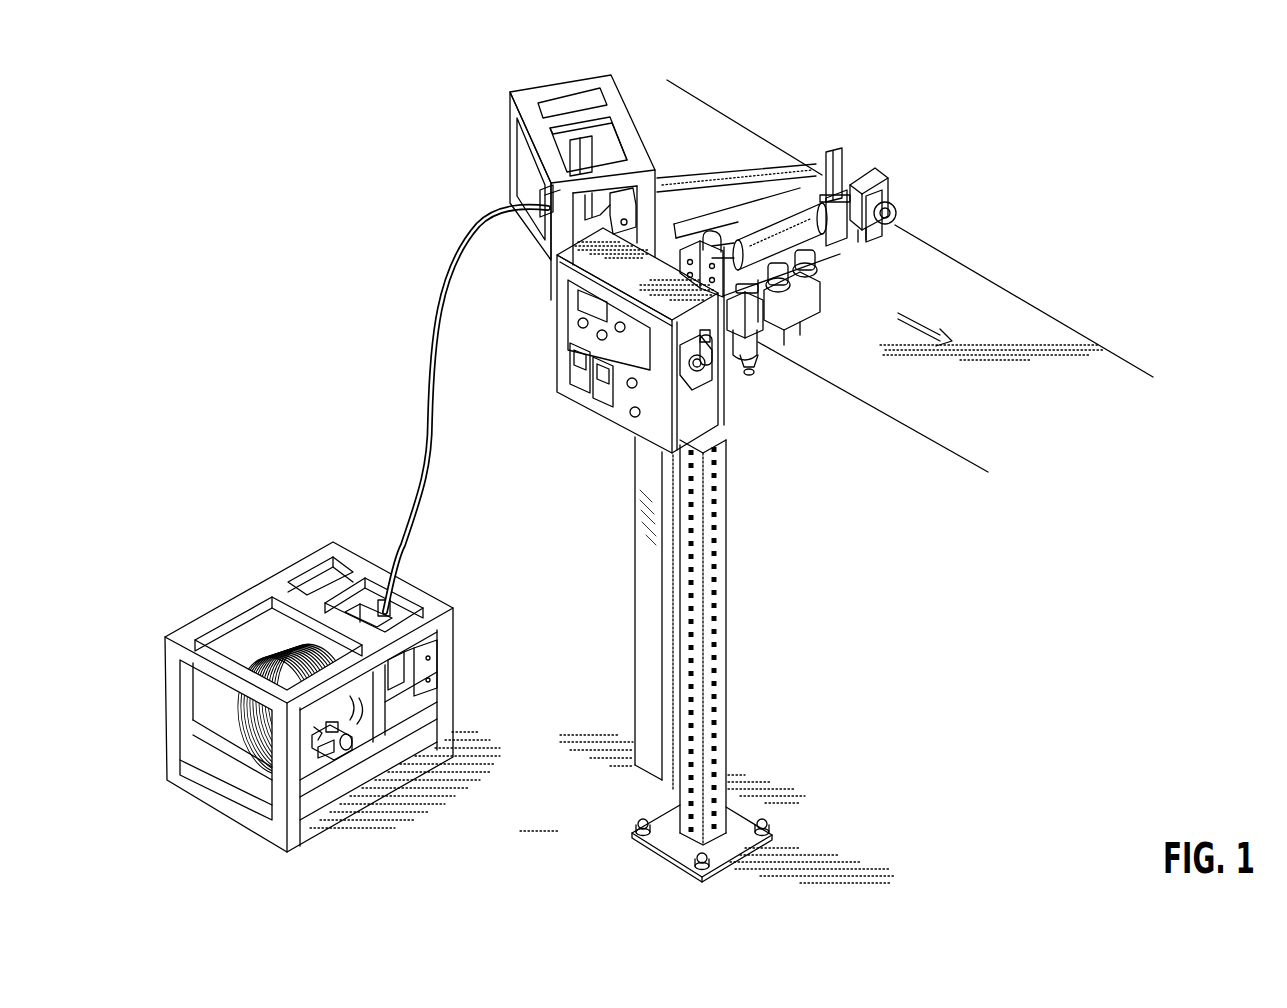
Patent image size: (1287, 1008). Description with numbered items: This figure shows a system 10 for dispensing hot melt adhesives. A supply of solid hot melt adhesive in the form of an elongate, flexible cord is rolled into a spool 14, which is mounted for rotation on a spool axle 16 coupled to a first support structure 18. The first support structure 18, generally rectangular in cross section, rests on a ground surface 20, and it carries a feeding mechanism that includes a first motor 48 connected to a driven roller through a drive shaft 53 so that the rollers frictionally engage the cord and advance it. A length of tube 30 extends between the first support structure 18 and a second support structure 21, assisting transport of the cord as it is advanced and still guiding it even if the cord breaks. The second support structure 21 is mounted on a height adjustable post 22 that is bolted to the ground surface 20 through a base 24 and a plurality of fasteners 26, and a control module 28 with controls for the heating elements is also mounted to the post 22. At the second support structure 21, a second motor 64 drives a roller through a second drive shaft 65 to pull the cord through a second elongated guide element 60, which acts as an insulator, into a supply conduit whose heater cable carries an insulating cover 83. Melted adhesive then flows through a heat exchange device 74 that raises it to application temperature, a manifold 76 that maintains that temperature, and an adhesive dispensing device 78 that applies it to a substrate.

The system 10 is at (243, 110).
The spool 14 is at (255, 766).
The spool axle 16 is at (352, 758).
The first support structure 18 is at (236, 598).
The ground surface 20 is at (531, 829).
The second support structure 21 is at (557, 168).
The height adjustable post 22 is at (707, 641).
The base 24 is at (673, 856).
The fasteners 26 is at (636, 823).
The control module 28 is at (588, 398).
The tube 30 is at (433, 322).
The first motor 48 is at (446, 668).
The drive shaft 53 is at (380, 620).
The second elongated guide element 60 is at (544, 190).
The second motor 64 is at (590, 150).
The second drive shaft 65 is at (622, 150).
The heat exchange device 74 is at (838, 149).
The manifold 76 is at (882, 170).
The adhesive dispensing device 78 is at (900, 199).
The insulating cover 83 is at (742, 170).